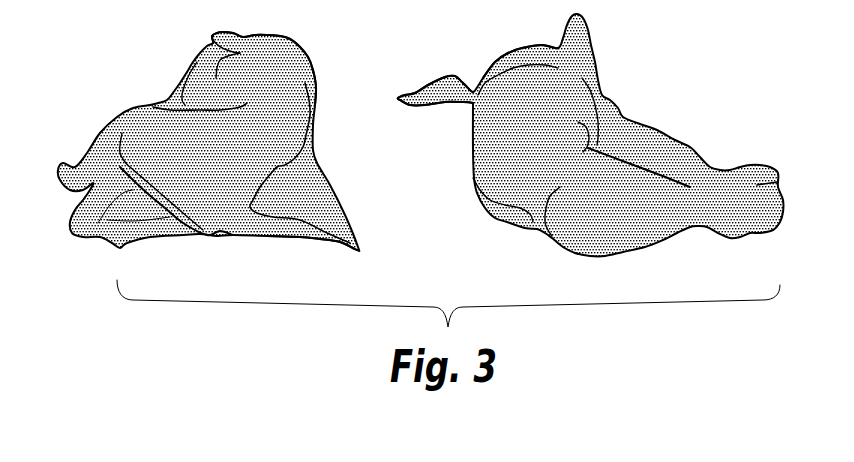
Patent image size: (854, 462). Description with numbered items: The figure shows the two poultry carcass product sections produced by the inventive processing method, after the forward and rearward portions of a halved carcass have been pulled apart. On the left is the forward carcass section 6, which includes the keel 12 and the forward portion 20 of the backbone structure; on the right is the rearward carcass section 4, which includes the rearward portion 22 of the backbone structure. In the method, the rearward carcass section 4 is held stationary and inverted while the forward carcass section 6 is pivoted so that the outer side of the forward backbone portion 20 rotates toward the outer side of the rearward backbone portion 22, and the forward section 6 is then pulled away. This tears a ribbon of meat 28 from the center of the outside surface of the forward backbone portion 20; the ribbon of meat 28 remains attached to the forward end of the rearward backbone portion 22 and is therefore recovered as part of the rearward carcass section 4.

The rearward carcass section 4 is at (642, 109).
The forward carcass section 6 is at (143, 84).
The keel 12 is at (317, 238).
The forward portion of the backbone structure 20 is at (317, 100).
The rearward portion of the backbone structure 22 is at (483, 90).
The ribbon of meat 28 is at (425, 95).